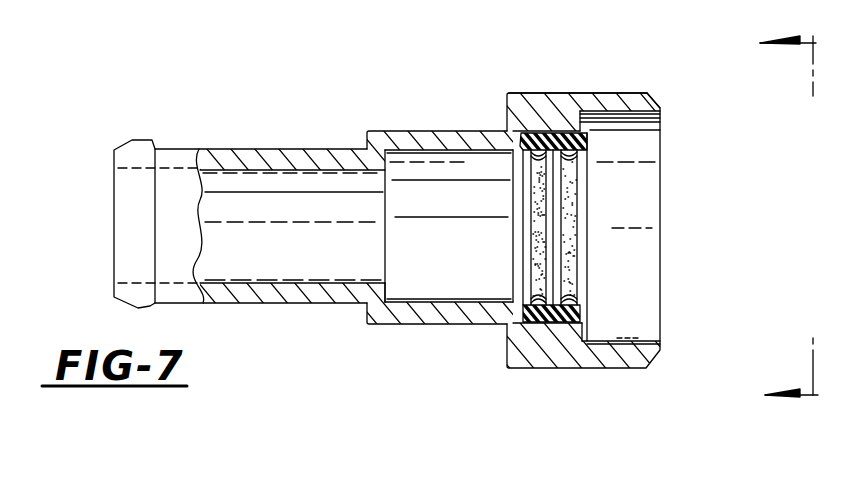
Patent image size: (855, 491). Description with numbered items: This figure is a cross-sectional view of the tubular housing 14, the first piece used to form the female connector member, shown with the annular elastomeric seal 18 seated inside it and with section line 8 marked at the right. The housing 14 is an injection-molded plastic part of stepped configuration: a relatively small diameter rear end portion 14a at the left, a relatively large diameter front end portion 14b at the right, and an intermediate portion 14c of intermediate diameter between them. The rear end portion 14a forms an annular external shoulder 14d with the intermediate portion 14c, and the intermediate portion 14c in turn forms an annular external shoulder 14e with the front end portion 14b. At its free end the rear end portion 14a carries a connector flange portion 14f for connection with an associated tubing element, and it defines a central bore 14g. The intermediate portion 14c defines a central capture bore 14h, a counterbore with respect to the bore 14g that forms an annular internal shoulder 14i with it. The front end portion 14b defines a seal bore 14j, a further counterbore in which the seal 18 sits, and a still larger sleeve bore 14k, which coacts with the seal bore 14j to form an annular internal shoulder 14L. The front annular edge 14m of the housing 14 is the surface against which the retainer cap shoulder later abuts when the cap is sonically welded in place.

The section line 8- 8 is at (789, 204).
The tubular housing 14 is at (420, 122).
The rear end portion 14a is at (263, 149).
The front end portion 14b is at (637, 93).
The intermediate portion 14c is at (477, 131).
The annular external shoulder 14d is at (366, 317).
The annular external shoulder 14e is at (505, 345).
The connector flange portion 14f is at (142, 141).
The central bore 14g is at (318, 180).
The central capture bore 14h is at (457, 152).
The annular internal shoulder 14i is at (390, 297).
The seal bore 14j is at (568, 133).
The sleeve bore 14k is at (660, 120).
The annular internal shoulder 14L is at (598, 112).
The front annular edge 14m is at (660, 112).
The annular elastomeric seal 18 is at (600, 238).